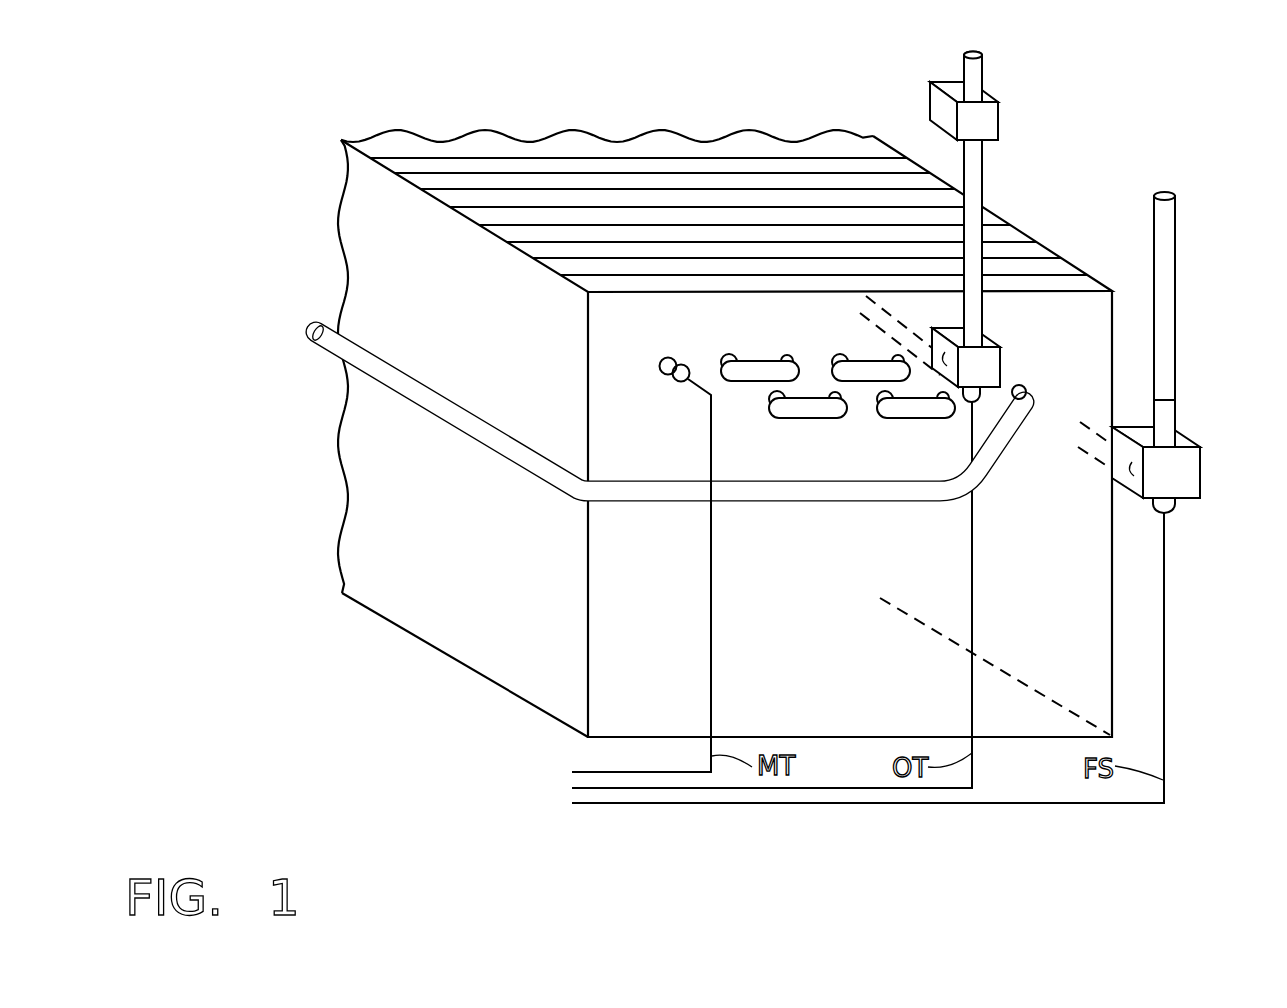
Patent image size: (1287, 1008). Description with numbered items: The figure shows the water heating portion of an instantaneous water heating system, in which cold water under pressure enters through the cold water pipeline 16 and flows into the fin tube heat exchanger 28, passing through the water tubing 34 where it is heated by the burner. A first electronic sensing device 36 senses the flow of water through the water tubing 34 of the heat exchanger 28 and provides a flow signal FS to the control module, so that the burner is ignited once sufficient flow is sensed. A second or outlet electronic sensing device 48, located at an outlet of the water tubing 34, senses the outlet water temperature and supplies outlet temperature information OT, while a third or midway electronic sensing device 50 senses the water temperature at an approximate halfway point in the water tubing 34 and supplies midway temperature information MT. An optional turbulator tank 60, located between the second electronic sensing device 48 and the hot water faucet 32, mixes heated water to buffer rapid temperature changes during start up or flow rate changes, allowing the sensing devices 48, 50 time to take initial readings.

The cold water pipeline 16 is at (1168, 258).
The heat exchanger 28 is at (362, 437).
The hot water faucet 32 is at (977, 72).
The water tubing 34 is at (665, 357).
The first electronic sensing device 36 is at (1172, 513).
The second electronic sensing device 48 is at (975, 390).
The third electronic sensing device 50 is at (678, 386).
The turbulator tank 60 is at (942, 108).